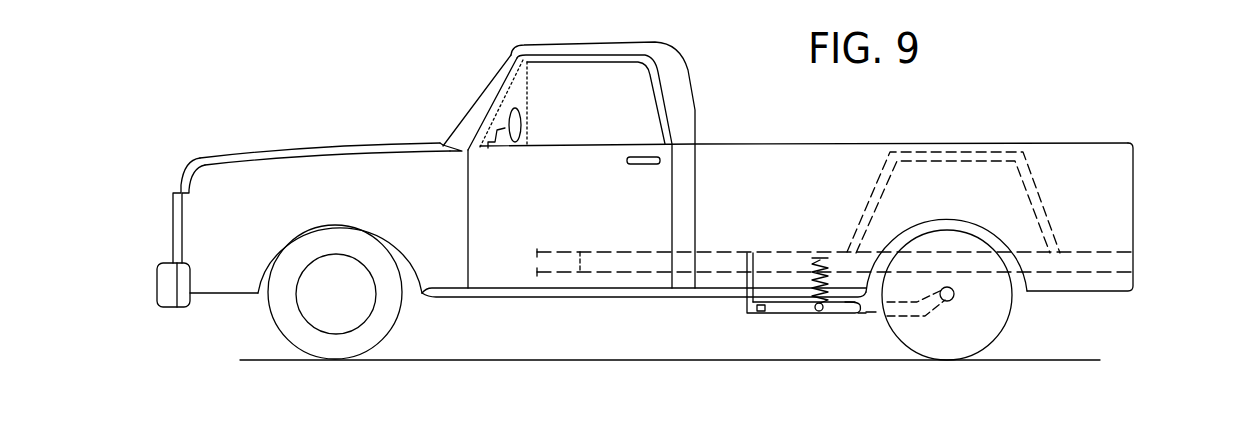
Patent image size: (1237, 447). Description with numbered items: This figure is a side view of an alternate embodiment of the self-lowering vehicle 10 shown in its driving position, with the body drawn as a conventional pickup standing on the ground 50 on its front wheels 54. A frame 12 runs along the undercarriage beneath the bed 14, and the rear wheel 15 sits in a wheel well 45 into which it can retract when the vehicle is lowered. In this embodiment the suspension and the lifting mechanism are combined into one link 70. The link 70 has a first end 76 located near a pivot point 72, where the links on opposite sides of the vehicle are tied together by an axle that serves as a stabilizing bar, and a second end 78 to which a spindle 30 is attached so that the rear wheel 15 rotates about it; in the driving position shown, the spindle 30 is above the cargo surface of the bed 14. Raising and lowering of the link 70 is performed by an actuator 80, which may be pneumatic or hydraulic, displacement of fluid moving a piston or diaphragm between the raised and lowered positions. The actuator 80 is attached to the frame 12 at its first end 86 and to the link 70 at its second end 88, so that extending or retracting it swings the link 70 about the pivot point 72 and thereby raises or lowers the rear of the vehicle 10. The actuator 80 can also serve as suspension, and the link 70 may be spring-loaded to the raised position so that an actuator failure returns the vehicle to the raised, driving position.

The vehicle 10 is at (378, 111).
The frame 12 is at (770, 253).
The bed 14 is at (1088, 160).
The rear wheel 15 is at (1003, 315).
The spindle 30 is at (950, 300).
The wheel well 45 is at (993, 175).
The ground 50 is at (762, 361).
The front wheel 54 is at (270, 332).
The link 70 is at (862, 317).
The pivot point 72 is at (762, 314).
The first end 76 is at (800, 319).
The second end 78 is at (873, 326).
The actuator 80 is at (805, 257).
The first end 86 is at (798, 278).
The second end 88 is at (855, 313).